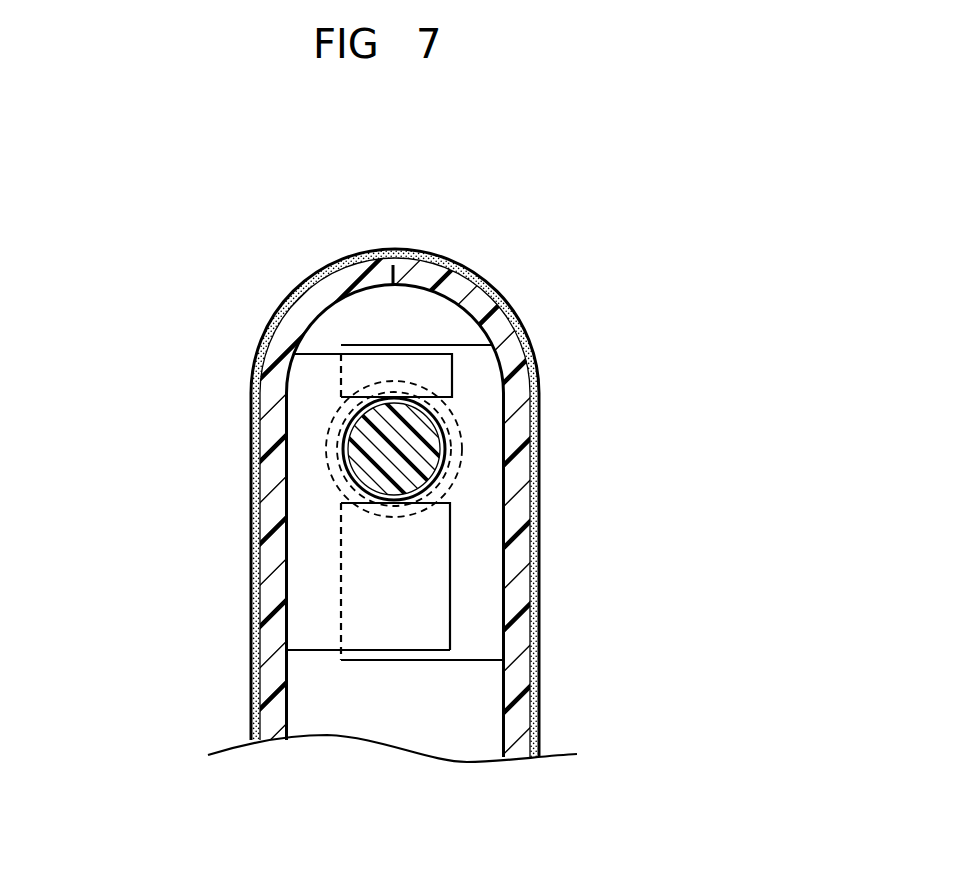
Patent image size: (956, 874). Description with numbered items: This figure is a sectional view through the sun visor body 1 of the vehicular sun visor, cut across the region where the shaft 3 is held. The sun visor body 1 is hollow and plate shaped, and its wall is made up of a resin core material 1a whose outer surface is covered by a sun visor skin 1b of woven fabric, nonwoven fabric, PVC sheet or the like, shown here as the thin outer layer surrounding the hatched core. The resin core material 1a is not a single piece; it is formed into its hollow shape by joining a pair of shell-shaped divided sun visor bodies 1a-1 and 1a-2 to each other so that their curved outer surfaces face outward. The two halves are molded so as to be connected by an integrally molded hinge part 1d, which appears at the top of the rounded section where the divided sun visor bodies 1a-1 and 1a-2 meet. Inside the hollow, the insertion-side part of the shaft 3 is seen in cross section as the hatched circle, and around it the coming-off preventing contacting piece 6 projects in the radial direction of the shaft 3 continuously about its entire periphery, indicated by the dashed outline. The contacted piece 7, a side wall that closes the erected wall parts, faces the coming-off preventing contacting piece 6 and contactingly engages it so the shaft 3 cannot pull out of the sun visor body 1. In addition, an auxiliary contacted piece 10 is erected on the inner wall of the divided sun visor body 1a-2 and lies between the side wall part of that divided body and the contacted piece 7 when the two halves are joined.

The sun visor body 1 is at (199, 686).
The resin core material 1a is at (478, 478).
The divided sun visor body 1a-1 is at (517, 513).
The divided sun visor body 1a-2 is at (273, 430).
The sun visor skin 1b is at (461, 266).
The hinge part 1d is at (398, 283).
The shaft 3 is at (418, 442).
The coming-off preventing contacting piece 6 is at (462, 440).
The contacted piece 7 is at (470, 602).
The auxiliary contacted piece 10 is at (327, 637).